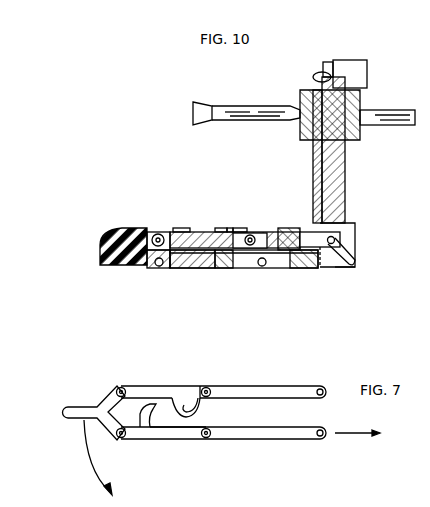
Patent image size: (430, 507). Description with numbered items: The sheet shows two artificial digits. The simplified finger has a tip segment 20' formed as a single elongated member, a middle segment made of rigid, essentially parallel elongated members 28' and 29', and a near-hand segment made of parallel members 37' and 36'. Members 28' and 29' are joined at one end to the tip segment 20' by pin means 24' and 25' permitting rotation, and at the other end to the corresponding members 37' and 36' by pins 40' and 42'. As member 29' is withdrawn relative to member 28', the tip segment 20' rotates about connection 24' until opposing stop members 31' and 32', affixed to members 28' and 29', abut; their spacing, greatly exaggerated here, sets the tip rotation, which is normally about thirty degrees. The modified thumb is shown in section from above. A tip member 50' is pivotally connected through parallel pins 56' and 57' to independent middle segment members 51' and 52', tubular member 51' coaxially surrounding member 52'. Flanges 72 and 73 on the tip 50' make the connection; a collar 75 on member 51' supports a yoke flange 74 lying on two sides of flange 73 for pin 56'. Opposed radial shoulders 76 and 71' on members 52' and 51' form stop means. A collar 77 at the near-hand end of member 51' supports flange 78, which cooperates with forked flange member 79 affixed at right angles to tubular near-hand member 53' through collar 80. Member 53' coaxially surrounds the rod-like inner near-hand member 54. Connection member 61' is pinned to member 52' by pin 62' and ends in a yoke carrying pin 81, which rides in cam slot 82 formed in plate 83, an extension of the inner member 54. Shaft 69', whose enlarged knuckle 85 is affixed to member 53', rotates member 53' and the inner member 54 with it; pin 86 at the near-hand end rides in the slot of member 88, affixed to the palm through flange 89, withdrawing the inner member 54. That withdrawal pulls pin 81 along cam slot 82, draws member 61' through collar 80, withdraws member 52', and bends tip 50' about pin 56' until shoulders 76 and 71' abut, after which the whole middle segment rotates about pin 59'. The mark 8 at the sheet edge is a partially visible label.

In FIG. 10, the slot member 88 is at (338, 62).
In FIG. 10, the flange 89 is at (357, 66).
In FIG. 10, the pin 86 is at (318, 79).
In FIG. 10, the side bar 8 is at (394, 103).
In FIG. 10, the shaft 69' is at (246, 125).
In FIG. 10, the inner near-hand member 54 is at (320, 150).
In FIG. 10, the knuckle 85 is at (358, 135).
In FIG. 10, the tubular near-hand member 53' is at (357, 150).
In FIG. 10, the pivot pin 57' is at (159, 213).
In FIG. 10, the collar 75 is at (184, 228).
In FIG. 10, the radial shoulder 76 is at (221, 228).
In FIG. 10, the inner middle segment member 52' is at (235, 223).
In FIG. 10, the collar 77 is at (231, 229).
In FIG. 10, the radial shoulder 71' is at (256, 207).
In FIG. 10, the flange 72 is at (155, 235).
In FIG. 10, the pin 62' is at (258, 226).
In FIG. 10, the connection member 61' is at (293, 224).
In FIG. 10, the pin 81 is at (336, 238).
In FIG. 10, the plate 83 is at (352, 258).
In FIG. 10, the tip member 50' is at (118, 259).
In FIG. 10, the flange 73 is at (150, 266).
In FIG. 10, the pin 56' is at (159, 283).
In FIG. 10, the yoke flange 74 is at (176, 268).
In FIG. 10, the tubular middle segment member 51' is at (244, 279).
In FIG. 10, the flange 78 is at (228, 268).
In FIG. 10, the pin 59' is at (259, 283).
In FIG. 10, the forked flange member 79 is at (284, 268).
In FIG. 10, the collar 80 is at (327, 256).
In FIG. 10, the cam slot 82 is at (347, 278).
In FIG. 7, the tip segment 20' is at (87, 406).
In FIG. 7, the pin means 24' is at (121, 372).
In FIG. 7, the pin means 25' is at (119, 446).
In FIG. 7, the middle segment member 28' is at (177, 382).
In FIG. 7, the stop member 31' is at (200, 379).
In FIG. 7, the pin 40' is at (228, 372).
In FIG. 7, the near-hand segment member 37' is at (223, 372).
In FIG. 7, the stop member 32' is at (154, 433).
In FIG. 7, the middle segment member 29' is at (179, 445).
In FIG. 7, the pin 42' is at (222, 446).
In FIG. 7, the near-hand segment member 36' is at (223, 445).